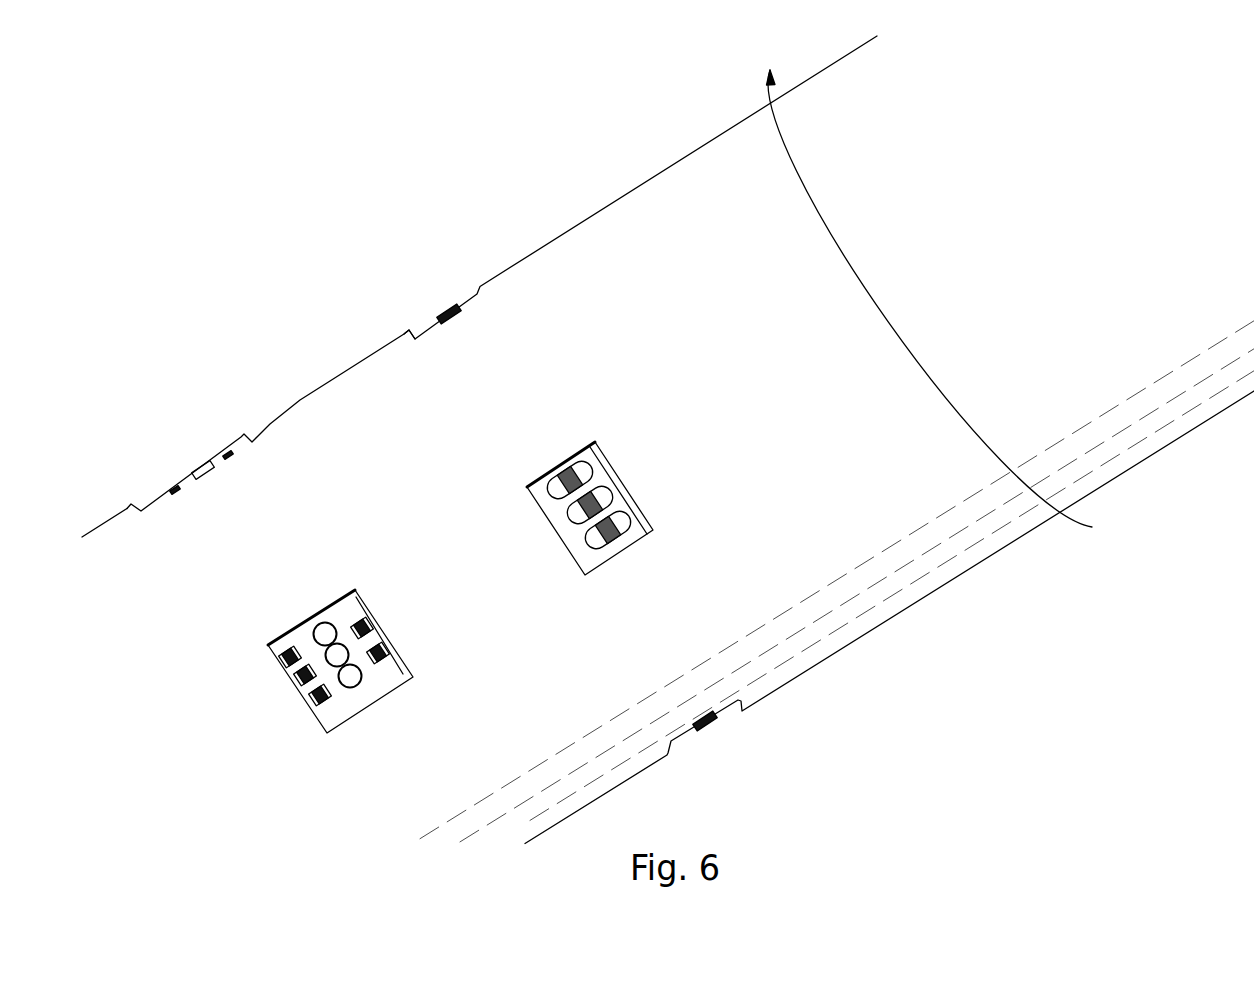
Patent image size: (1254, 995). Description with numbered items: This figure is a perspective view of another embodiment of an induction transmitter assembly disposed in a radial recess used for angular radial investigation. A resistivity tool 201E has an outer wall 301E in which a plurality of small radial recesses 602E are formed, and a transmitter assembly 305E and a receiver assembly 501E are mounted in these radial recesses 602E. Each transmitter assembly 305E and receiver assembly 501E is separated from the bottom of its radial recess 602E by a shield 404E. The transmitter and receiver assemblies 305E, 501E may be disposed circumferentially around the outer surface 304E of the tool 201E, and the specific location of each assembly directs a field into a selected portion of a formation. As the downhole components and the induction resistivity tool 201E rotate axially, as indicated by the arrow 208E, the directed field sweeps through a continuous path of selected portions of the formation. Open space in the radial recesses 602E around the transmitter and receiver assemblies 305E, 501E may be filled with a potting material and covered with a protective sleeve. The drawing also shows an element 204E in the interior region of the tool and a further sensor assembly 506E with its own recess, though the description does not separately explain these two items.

The resistivity tool 201E is at (618, 197).
The interior passage 204E is at (662, 446).
The arrow 208E is at (983, 437).
The outer wall 301E is at (167, 577).
The outer surface 304E is at (772, 543).
The transmitter assembly 305E is at (447, 304).
The shield 404E is at (320, 713).
The receiver assembly 501E is at (197, 431).
The sensor module 506E is at (543, 482).
The radial recess 602E is at (414, 333).